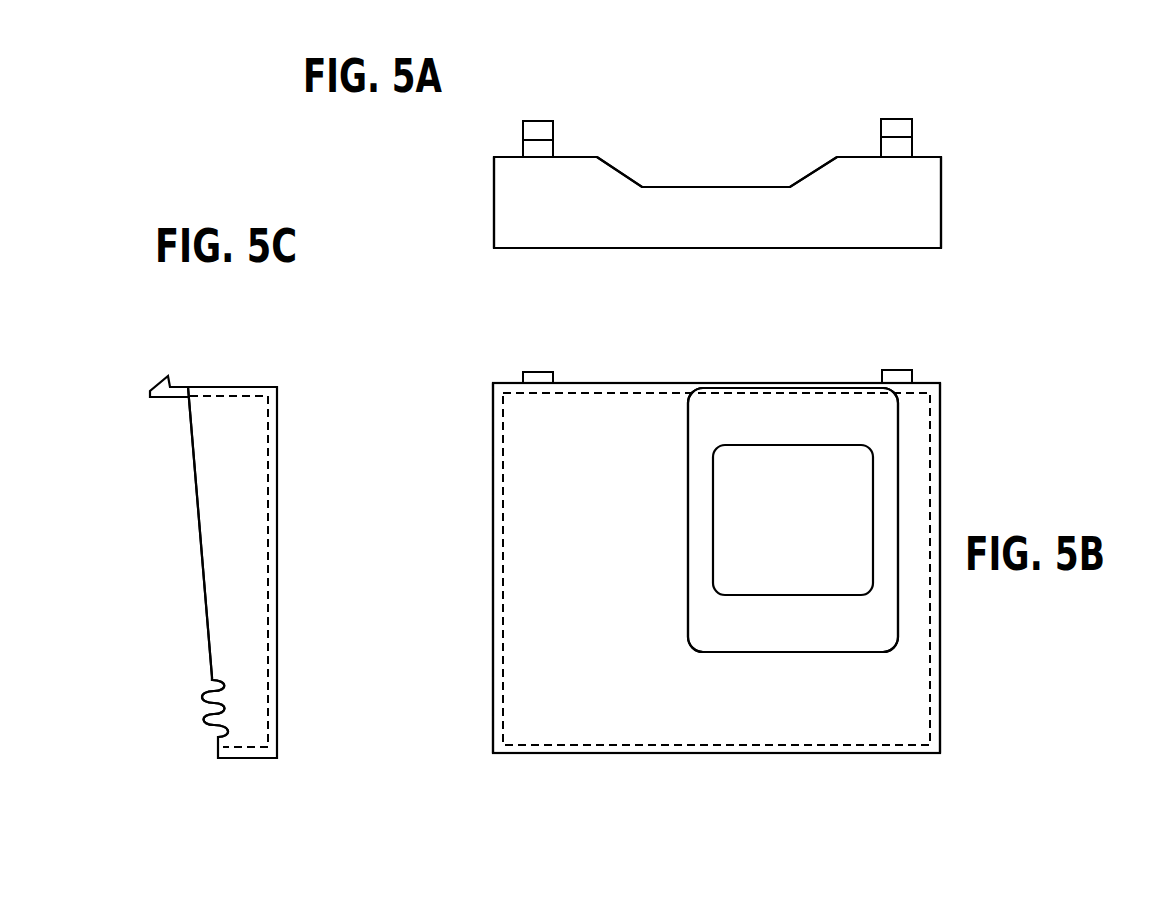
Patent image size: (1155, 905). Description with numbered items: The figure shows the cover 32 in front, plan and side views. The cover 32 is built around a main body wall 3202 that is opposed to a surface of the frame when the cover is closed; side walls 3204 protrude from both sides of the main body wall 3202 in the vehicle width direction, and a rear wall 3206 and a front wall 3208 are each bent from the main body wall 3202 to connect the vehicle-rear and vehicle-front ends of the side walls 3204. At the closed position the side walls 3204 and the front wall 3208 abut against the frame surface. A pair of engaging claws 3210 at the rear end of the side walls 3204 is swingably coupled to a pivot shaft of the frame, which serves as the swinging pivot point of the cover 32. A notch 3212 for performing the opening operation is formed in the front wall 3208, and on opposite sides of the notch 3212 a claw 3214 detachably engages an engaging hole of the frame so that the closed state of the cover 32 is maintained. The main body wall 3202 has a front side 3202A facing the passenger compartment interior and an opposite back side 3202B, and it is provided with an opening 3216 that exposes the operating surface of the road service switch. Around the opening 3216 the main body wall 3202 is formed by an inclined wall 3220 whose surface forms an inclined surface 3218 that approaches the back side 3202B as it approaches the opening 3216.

In FIG. 5A, the cover 32 is at (612, 258).
In FIG. 5A, the main body wall 3202 is at (813, 250).
In FIG. 5B, the main body wall 3202 is at (594, 672).
In FIG. 5C, the main body wall 3202 is at (277, 545).
In FIG. 5B, the front side 3202A is at (716, 617).
In FIG. 5C, the front side 3202A is at (338, 571).
In FIG. 5C, the back side 3202B is at (262, 590).
In FIG. 5A, the side walls 3204 is at (494, 193).
In FIG. 5B, the side walls 3204 is at (493, 470).
In FIG. 5C, the side walls 3204 is at (217, 503).
In FIG. 5A, the rear wall 3206 is at (702, 225).
In FIG. 5B, the rear wall 3206 is at (645, 383).
In FIG. 5C, the rear wall 3206 is at (232, 387).
In FIG. 5B, the front wall 3208 is at (717, 753).
In FIG. 5C, the front wall 3208 is at (250, 758).
In FIG. 5C, the engaging claws 3210 is at (202, 712).
In FIG. 5A, the notch 3212 is at (735, 186).
In FIG. 5A, the claw 3214 is at (532, 121).
In FIG. 5B, the claw 3214 is at (535, 372).
In FIG. 5C, the claw 3214 is at (165, 382).
In FIG. 5B, the opening 3216 is at (826, 534).
In FIG. 5B, the inclined surface 3218 is at (798, 622).
In FIG. 5B, the inclined wall 3220 is at (845, 599).